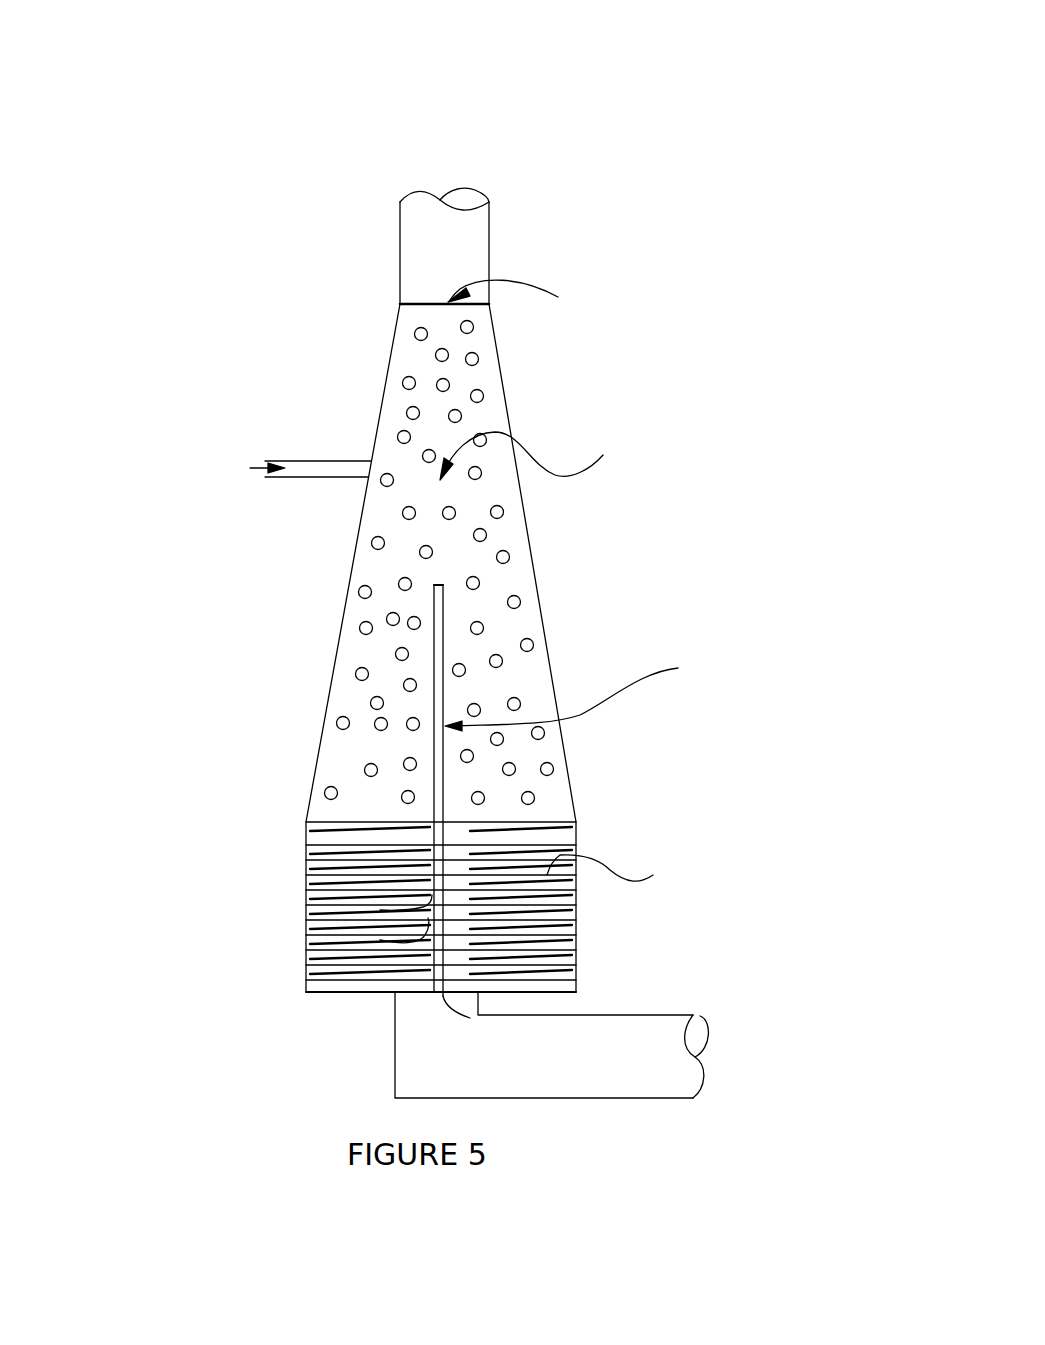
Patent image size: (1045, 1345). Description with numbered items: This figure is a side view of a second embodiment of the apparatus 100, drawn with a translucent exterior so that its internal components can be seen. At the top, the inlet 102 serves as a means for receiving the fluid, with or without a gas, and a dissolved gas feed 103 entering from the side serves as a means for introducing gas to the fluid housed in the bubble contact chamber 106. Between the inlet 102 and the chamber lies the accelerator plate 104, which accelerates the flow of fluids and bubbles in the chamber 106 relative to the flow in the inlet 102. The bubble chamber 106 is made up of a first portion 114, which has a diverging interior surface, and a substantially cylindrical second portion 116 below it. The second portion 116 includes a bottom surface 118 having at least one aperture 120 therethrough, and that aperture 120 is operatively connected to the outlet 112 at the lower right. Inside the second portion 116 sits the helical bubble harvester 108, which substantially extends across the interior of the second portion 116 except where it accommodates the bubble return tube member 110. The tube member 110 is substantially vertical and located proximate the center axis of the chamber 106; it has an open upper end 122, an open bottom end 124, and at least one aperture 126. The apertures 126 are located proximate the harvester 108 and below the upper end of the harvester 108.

The apparatus 100 is at (608, 207).
The inlet 102 is at (415, 190).
The dissolved gas feed 103 is at (300, 458).
The accelerator plate 104 is at (412, 303).
The bubble contact chamber 106 is at (362, 518).
The bubble harvester 108 is at (316, 872).
The bubble return tube member 110 is at (445, 656).
The outlet 112 is at (693, 1080).
The first portion 114 is at (393, 412).
The second portion 116 is at (327, 831).
The bottom surface 118 is at (338, 993).
The aperture 120 is at (442, 995).
The open upper end 122 is at (443, 585).
The open bottom end 124 is at (437, 985).
The aperture 126 is at (380, 910).